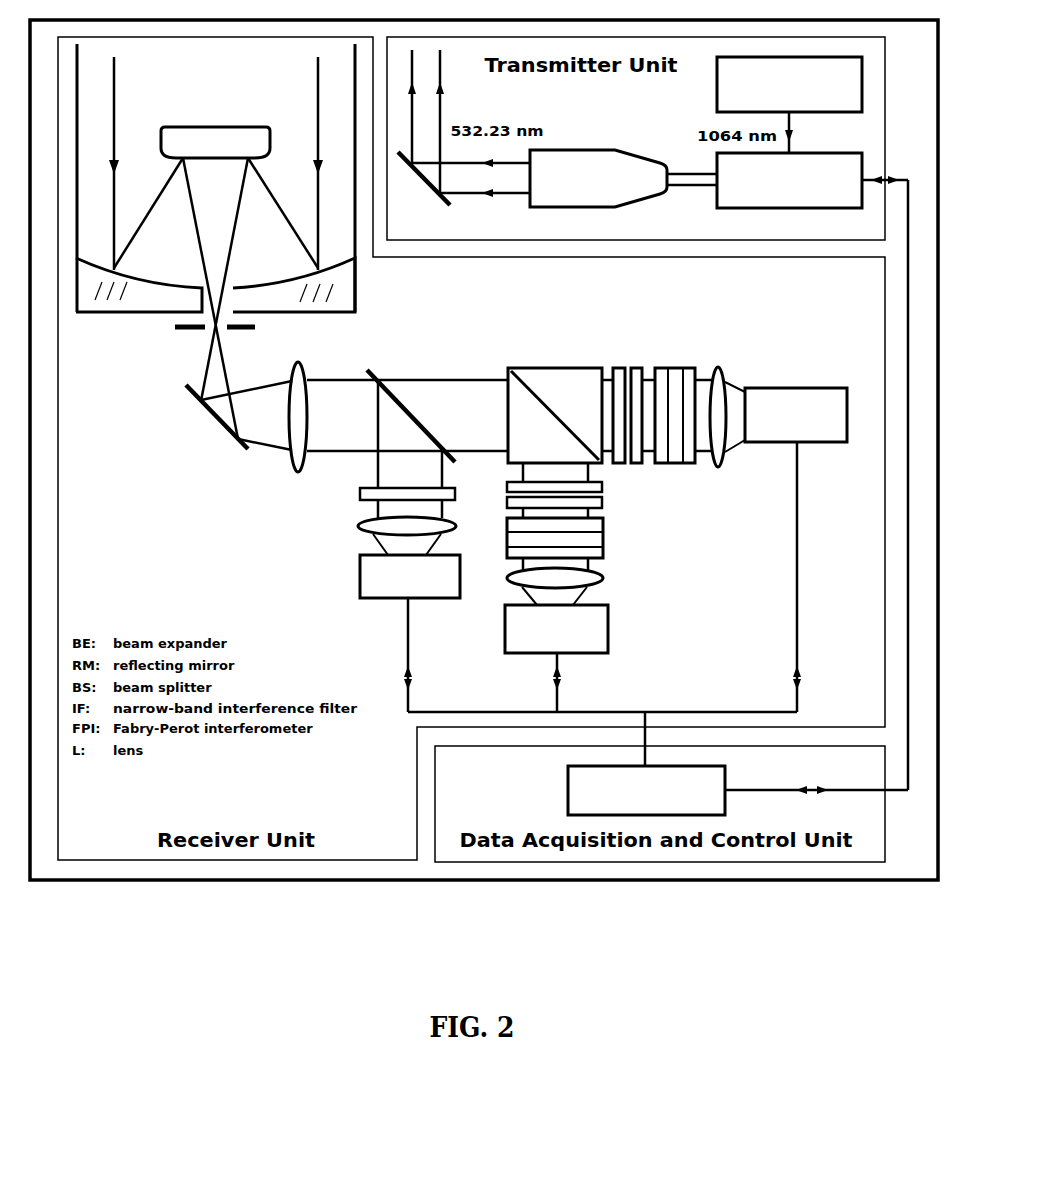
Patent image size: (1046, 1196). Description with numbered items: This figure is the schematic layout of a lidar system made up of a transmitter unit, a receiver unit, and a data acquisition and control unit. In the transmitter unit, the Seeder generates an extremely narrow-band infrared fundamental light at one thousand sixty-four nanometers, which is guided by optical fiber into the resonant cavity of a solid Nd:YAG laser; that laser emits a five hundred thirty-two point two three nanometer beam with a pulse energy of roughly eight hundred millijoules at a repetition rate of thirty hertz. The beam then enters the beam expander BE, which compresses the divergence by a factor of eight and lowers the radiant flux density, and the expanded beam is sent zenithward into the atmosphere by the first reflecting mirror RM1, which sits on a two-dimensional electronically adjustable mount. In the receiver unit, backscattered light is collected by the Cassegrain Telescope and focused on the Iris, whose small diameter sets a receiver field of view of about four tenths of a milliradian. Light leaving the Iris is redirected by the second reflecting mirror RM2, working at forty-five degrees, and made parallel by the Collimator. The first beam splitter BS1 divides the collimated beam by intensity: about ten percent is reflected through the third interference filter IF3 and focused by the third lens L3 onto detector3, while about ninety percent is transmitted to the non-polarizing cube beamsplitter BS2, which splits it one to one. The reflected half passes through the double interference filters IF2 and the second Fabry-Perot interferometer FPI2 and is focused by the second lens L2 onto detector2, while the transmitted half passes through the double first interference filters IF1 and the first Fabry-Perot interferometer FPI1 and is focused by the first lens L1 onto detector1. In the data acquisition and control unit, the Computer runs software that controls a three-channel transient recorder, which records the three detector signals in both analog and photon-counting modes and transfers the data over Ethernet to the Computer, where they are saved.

The telescope Telescope is at (215, 241).
The iris Iris is at (195, 327).
The first reflecting mirror RM1 is at (424, 192).
The second reflecting mirror RM2 is at (231, 417).
The collimator Collimator is at (296, 406).
The first beam splitter BS1 is at (411, 401).
The non-polarizing cube beamsplitter BS2 is at (555, 399).
The first narrow-band interference filters IF1 is at (620, 358).
The second narrow-band interference filters IF2 is at (612, 488).
The third narrow-band interference filter IF3 is at (384, 495).
The first Fabry-Perot interferometer FPI1 is at (674, 400).
The second Fabry-Perot interferometer FPI2 is at (585, 538).
The first lens L1 is at (727, 402).
The second lens L2 is at (573, 586).
The third lens L3 is at (387, 536).
The first detector detector1 is at (796, 415).
The second detector detector2 is at (556, 629).
The third detector detector3 is at (410, 576).
The beam expander BE is at (598, 178).
The seeder Seeder is at (789, 84).
The computer Computer is at (646, 790).